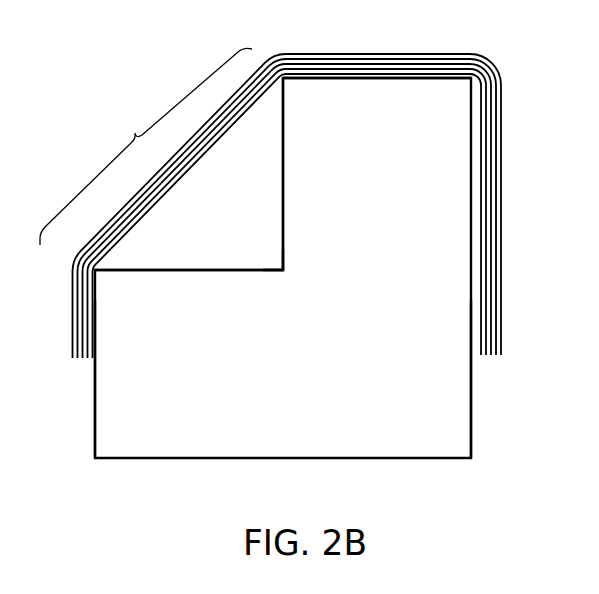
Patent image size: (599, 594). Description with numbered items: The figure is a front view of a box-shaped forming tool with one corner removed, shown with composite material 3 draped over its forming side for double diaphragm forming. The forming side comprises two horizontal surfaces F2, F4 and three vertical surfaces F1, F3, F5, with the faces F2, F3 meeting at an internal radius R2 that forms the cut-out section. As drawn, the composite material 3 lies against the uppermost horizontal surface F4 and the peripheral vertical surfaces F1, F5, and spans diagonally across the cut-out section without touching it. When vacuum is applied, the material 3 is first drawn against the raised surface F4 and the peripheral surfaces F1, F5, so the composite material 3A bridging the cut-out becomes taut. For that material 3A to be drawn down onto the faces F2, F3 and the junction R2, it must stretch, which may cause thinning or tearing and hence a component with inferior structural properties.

The composite material 3 is at (274, 60).
The composite material in the region of the cut-out section 3A is at (146, 146).
The vertical surface F1 is at (94, 382).
The horizontal surface F2 is at (170, 258).
The vertical surface F3 is at (283, 160).
The internal radius R2 is at (281, 268).
The horizontal surface F4 is at (450, 80).
The vertical surface F5 is at (471, 372).